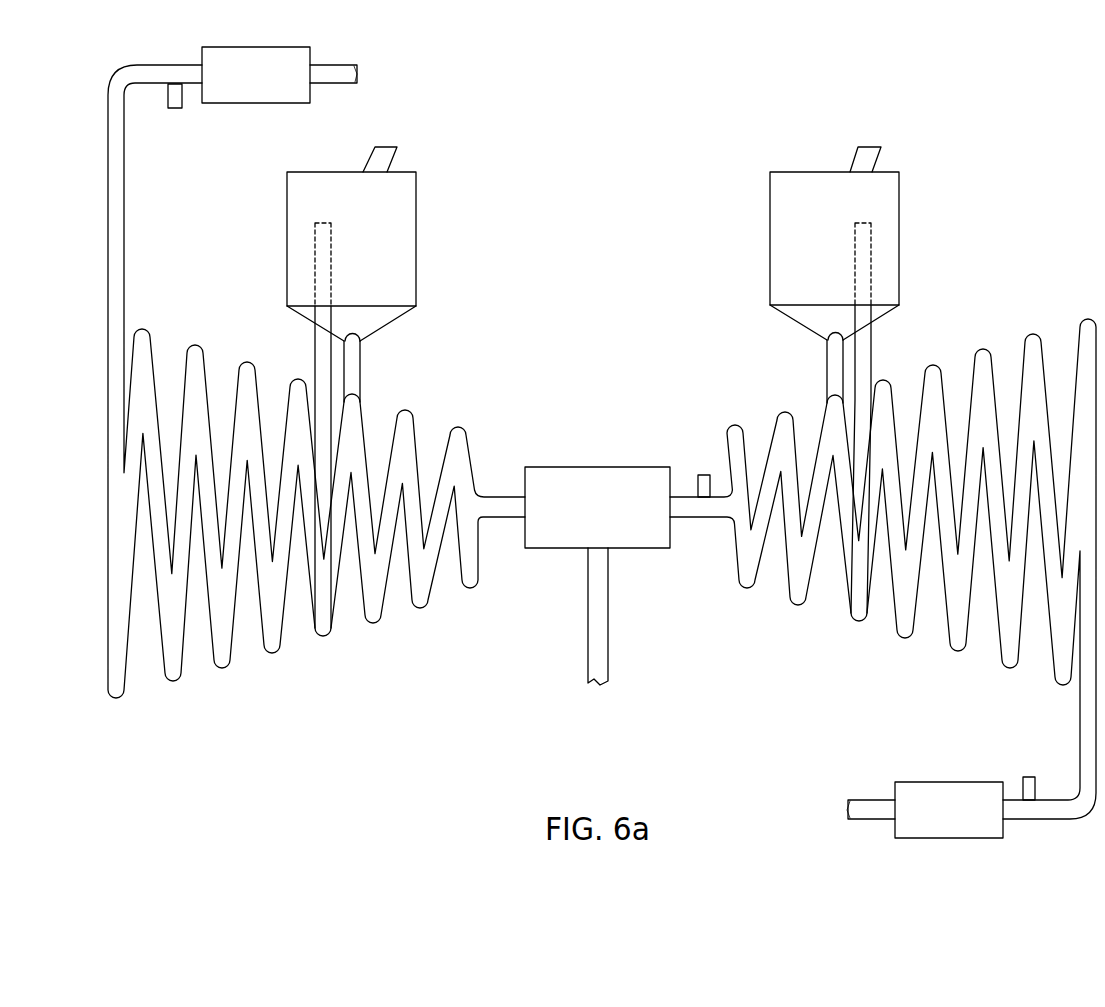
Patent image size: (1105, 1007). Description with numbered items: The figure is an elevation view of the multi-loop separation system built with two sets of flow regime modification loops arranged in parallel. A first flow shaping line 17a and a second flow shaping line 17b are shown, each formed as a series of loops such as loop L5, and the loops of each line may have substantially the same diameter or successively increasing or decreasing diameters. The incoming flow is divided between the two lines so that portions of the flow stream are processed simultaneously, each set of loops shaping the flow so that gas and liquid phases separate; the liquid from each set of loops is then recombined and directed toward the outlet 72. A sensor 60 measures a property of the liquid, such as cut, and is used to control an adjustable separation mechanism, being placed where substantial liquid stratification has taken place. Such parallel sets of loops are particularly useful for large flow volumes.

The first flow shaping line 17a is at (997, 343).
The second flow shaping line 17b is at (207, 329).
The sensor 60 is at (700, 475).
The outlet 72 is at (608, 628).
The loop L5 is at (905, 638).